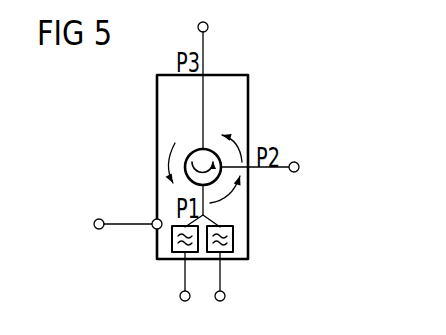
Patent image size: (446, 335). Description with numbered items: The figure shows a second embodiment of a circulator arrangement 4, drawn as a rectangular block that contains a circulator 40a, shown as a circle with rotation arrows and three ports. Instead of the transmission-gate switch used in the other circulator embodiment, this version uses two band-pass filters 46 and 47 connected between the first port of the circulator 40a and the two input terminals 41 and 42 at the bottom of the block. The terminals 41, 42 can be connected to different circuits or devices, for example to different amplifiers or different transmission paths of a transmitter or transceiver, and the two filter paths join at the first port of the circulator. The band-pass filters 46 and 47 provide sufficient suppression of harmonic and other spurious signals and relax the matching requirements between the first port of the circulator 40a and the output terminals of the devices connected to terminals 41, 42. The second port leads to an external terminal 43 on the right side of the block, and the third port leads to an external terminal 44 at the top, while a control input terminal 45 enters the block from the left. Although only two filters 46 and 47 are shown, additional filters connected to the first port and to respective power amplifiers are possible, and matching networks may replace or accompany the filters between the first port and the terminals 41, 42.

The circulator arrangement 4 is at (135, 138).
The circulator 40a is at (193, 151).
The input terminal 41 is at (180, 296).
The input terminal 42 is at (225, 296).
The port P2 connection 43 is at (299, 167).
The port P3 connection 44 is at (208, 27).
The control input terminal 45 is at (94, 225).
The band-pass filter 46 is at (172, 233).
The band-pass filter 47 is at (233, 238).